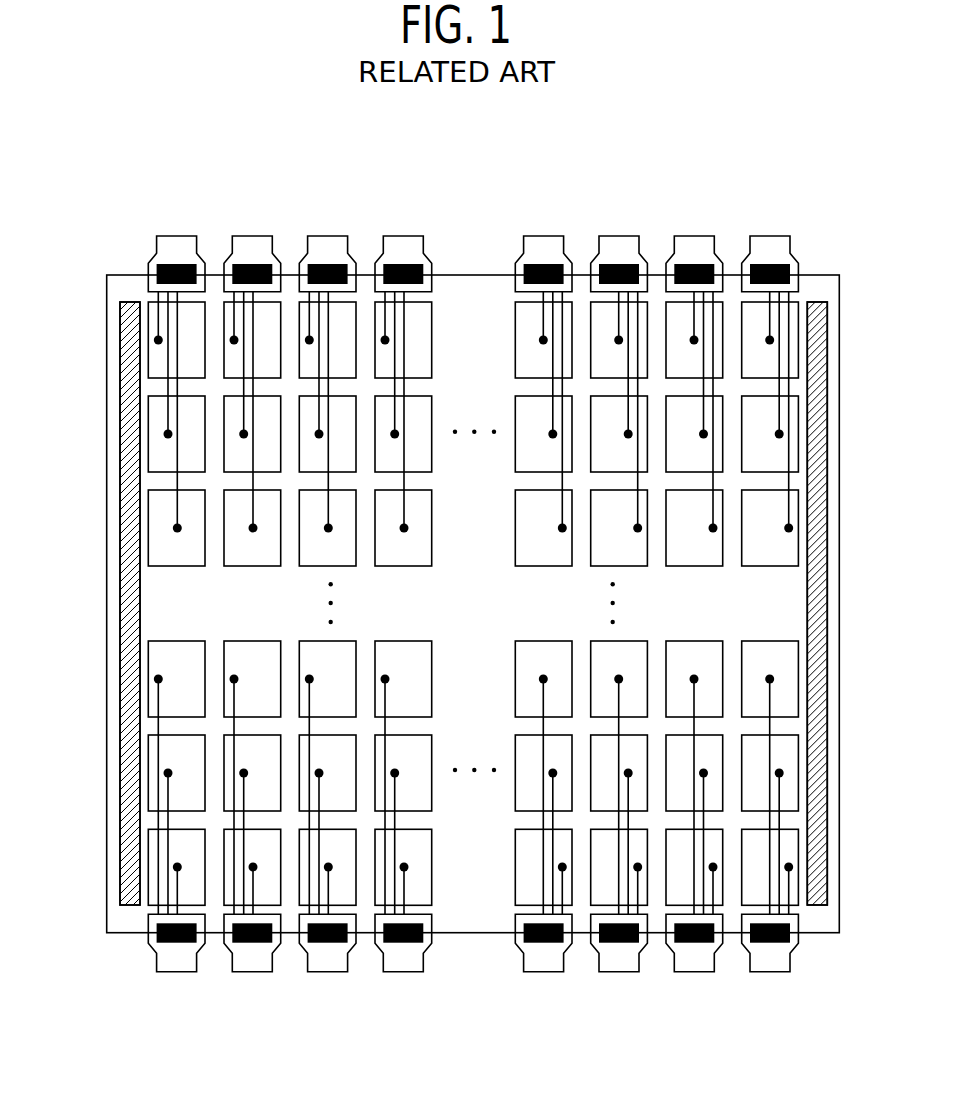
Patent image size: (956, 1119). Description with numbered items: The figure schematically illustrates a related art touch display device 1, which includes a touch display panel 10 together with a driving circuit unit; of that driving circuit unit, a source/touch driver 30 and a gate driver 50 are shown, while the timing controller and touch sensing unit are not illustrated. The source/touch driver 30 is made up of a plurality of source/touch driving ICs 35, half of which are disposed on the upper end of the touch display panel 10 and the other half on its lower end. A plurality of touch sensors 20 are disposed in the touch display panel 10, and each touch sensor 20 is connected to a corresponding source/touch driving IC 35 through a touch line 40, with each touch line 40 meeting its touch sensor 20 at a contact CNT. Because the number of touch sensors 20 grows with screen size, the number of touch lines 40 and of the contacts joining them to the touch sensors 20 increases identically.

The touch display device 1 is at (270, 152).
The touch display panel 10 is at (817, 275).
The touch sensors 20 is at (247, 567).
The source/touch driver 30 is at (168, 227).
The source/touch driving ICs 35 is at (157, 248).
The touch line 40 is at (177, 507).
The gate driver 50 is at (130, 593).
The contact hole CNT is at (166, 434).